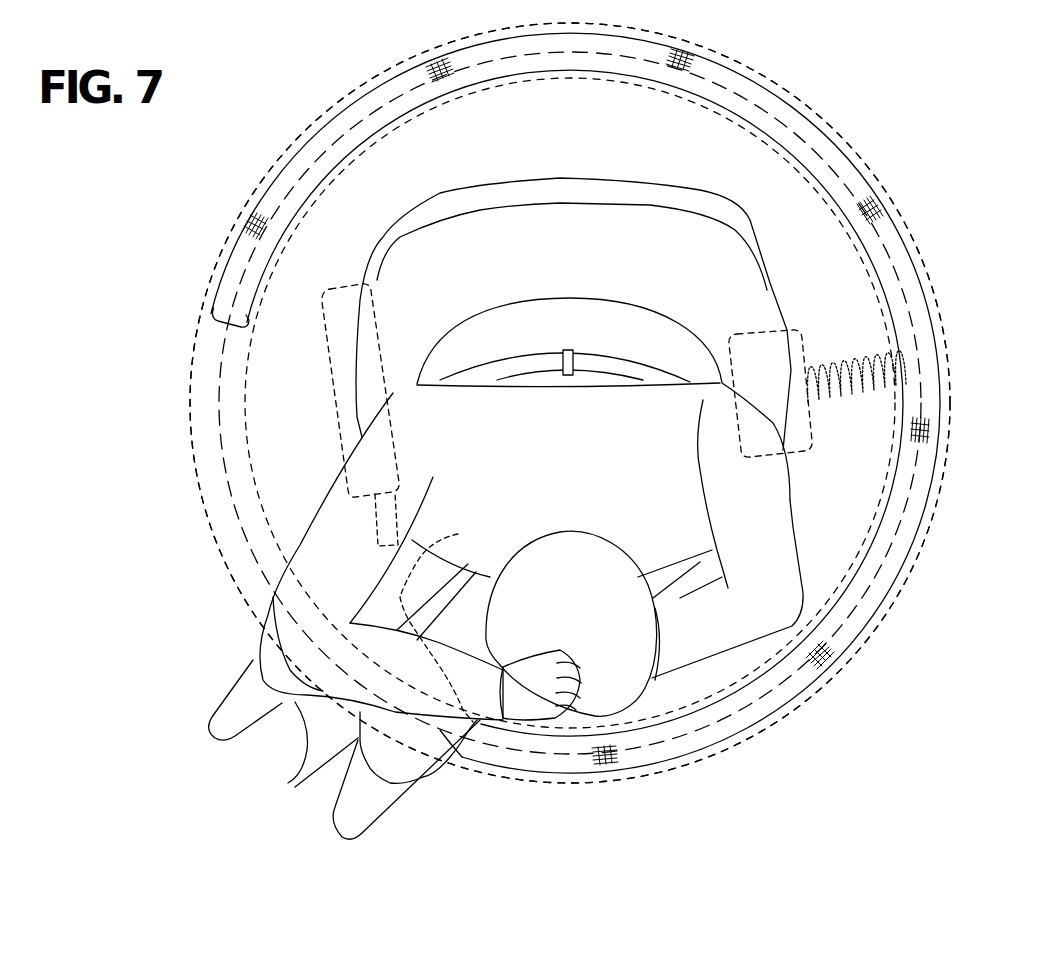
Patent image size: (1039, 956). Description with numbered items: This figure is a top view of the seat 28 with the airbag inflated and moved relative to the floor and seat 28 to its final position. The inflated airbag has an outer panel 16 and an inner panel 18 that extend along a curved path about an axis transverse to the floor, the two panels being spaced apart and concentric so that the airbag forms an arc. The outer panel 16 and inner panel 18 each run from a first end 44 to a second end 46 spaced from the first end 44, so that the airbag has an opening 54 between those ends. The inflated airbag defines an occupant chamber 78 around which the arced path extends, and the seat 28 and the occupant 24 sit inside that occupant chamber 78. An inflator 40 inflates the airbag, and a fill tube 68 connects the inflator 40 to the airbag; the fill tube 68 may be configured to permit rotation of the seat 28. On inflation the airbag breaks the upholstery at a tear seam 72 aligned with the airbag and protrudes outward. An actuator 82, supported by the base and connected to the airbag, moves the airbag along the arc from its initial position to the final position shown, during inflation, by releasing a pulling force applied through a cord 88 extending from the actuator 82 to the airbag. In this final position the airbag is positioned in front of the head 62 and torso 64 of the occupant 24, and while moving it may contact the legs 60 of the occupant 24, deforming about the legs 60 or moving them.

The outer panel 16 is at (226, 266).
The inner panel 18 is at (388, 122).
The occupant 24 is at (810, 530).
The seat 28 is at (748, 218).
The inflator 40 is at (807, 352).
The first end 44 is at (222, 318).
The second end 46 is at (452, 766).
The opening 54 is at (197, 527).
The legs 60 is at (300, 778).
The head 62 is at (612, 672).
The torso 64 is at (807, 582).
The fill tube 68 is at (836, 405).
The tear seam 72 is at (905, 216).
The occupant chamber 78 is at (571, 165).
The actuator 82 is at (333, 400).
The cord 88 is at (442, 620).